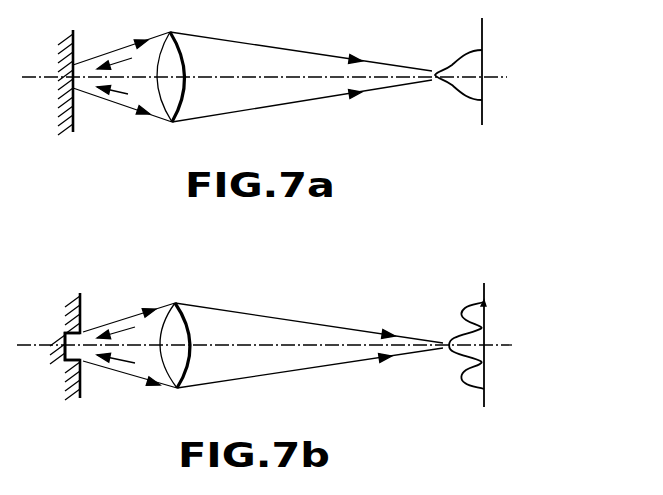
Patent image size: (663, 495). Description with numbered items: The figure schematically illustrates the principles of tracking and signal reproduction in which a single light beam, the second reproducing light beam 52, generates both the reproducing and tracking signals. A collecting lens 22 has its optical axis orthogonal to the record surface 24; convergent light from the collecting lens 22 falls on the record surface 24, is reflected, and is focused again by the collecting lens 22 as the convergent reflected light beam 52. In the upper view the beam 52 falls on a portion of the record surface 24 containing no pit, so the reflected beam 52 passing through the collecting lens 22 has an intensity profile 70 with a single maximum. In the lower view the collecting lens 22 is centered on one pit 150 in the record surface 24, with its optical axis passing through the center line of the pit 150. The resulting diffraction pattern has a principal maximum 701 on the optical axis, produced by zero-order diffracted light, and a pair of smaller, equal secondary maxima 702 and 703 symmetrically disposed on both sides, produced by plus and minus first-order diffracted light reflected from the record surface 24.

In FIG. 7A, the collecting lens 22 is at (170, 34).
In FIG. 7B, the collecting lens 22 is at (178, 303).
In FIG. 7A, the record surface 24 is at (67, 128).
In FIG. 7B, the record surface 24 is at (67, 385).
In FIG. 7A, the second reproducing light beam 52 is at (117, 62).
In FIG. 7B, the second reproducing light beam 52 is at (125, 330).
In FIG. 7A, the intensity profile 70 is at (467, 65).
In FIG. 7B, the intensity profile 70 is at (517, 345).
In FIG. 7B, the pit 150 is at (84, 329).
In FIG. 7B, the principal maximum 701 is at (478, 338).
In FIG. 7B, the secondary maximum 702 is at (486, 312).
In FIG. 7B, the secondary maximum 703 is at (478, 371).